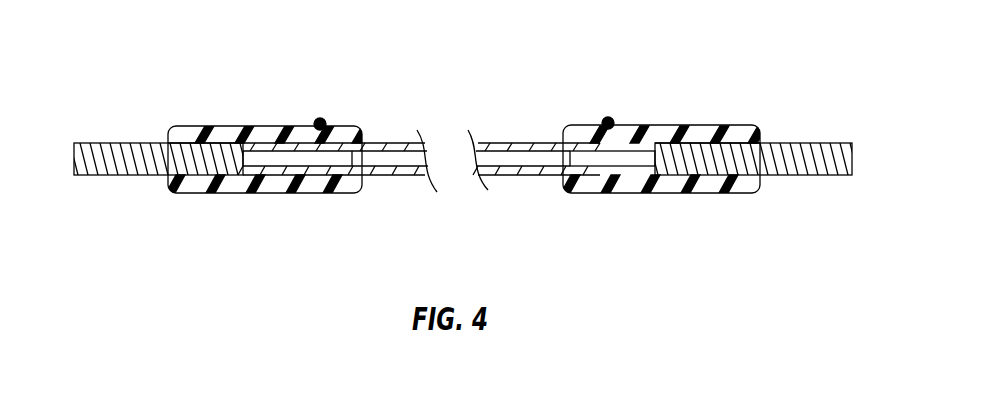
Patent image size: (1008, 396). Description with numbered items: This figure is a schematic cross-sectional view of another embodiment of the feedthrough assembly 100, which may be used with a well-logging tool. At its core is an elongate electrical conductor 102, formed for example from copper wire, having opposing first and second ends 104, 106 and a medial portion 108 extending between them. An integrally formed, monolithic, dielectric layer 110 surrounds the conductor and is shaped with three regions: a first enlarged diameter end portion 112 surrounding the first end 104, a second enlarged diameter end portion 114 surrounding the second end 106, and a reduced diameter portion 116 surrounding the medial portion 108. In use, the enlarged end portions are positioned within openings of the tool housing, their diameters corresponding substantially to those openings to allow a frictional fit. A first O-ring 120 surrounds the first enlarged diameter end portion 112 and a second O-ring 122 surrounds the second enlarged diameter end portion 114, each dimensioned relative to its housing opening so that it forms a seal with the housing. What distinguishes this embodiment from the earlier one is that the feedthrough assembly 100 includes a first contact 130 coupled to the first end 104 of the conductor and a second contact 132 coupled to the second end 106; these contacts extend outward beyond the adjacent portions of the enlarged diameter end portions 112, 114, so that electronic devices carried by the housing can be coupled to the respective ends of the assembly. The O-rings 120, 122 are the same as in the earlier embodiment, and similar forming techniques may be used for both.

The feedthrough assembly 100 is at (513, 57).
The elongate electrical conductor 102 is at (650, 182).
The first end of the elongate electrical conductor 104 is at (157, 130).
The second end of the elongate electrical conductor 106 is at (783, 125).
The medial portion of the elongate electrical conductor 108 is at (495, 148).
The integrally formed, monolithic, dielectric layer 110 is at (387, 119).
The first enlarged diameter end portion 112 is at (252, 128).
The second enlarged diameter end portion 114 is at (688, 130).
The reduced diameter portion 116 is at (397, 180).
The first O-ring 120 is at (320, 118).
The second O-ring 122 is at (608, 117).
The first contact 130 is at (120, 150).
The second contact 132 is at (782, 172).